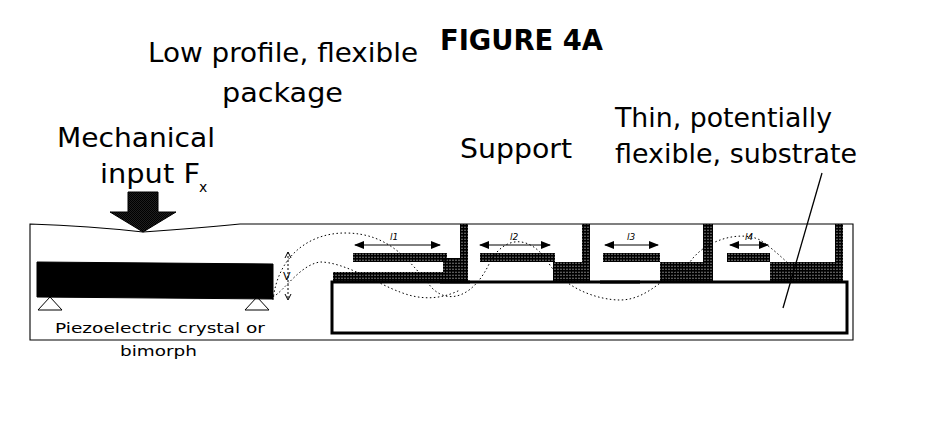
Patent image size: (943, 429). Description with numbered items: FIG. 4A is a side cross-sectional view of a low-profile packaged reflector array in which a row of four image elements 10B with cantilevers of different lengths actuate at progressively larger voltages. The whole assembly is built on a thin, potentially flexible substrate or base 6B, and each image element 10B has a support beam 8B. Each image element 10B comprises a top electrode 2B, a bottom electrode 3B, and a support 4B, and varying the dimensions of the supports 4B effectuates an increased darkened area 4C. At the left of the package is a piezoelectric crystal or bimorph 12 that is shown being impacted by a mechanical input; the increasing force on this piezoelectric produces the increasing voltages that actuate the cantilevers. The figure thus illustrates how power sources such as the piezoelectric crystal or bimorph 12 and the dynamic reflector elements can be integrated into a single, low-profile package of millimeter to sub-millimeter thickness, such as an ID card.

The piezoelectric crystal or bimorph 12 is at (217, 265).
The image element 10B is at (400, 220).
The support beam 8B is at (585, 222).
The top electrode 2B is at (612, 245).
The support 4B is at (696, 265).
The increased darkened area 4C is at (450, 285).
The substrate or base 6B is at (589, 307).
The bottom electrode 3B is at (622, 282).